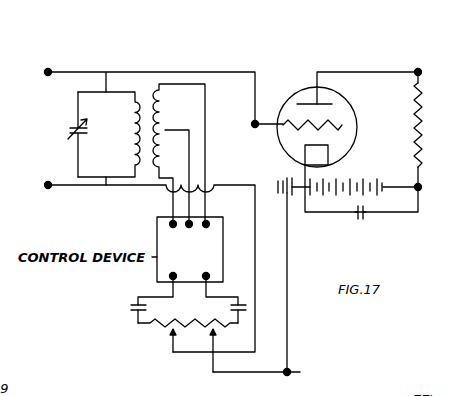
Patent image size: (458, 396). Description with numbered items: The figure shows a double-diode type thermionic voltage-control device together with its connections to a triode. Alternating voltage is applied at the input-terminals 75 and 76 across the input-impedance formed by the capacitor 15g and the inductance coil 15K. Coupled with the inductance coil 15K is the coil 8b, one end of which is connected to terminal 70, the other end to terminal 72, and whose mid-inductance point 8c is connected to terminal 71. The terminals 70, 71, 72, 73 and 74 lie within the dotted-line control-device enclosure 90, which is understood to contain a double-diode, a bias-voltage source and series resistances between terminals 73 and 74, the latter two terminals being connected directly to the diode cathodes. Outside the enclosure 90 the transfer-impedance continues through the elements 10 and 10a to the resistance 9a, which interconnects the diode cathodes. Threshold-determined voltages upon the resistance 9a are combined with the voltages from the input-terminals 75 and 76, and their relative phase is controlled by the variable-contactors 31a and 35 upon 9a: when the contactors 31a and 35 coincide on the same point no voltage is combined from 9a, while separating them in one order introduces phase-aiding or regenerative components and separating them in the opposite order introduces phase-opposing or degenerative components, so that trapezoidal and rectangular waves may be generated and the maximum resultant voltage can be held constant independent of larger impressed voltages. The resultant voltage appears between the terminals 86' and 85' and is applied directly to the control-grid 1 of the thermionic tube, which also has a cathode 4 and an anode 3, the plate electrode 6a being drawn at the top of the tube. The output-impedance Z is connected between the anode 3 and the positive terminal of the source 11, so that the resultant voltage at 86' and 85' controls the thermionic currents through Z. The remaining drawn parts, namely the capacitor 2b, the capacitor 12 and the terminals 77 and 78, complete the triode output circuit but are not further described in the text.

The input-terminal 75 is at (44, 70).
The input-terminal 76 is at (45, 187).
The input-impedance capacitor 15g is at (76, 127).
The inductance coil 15K is at (130, 122).
The coil 8b is at (164, 114).
The mid-inductance point 8c is at (166, 133).
The output terminal 86' is at (239, 120).
The anode 3 is at (326, 100).
The anode 6a is at (313, 88).
The control-grid 1 is at (283, 128).
The cathode 4 is at (332, 156).
The capacitor 2b is at (282, 178).
The output terminal 77 is at (422, 71).
The output-impedance Z is at (413, 113).
The voltage source 11 is at (385, 182).
The output terminal 78 is at (422, 187).
The bypass capacitor 12 is at (365, 218).
The control-device enclosure 90 is at (157, 245).
The terminal 70 is at (169, 226).
The terminal 71 is at (189, 228).
The terminal 72 is at (210, 225).
The terminal 73 is at (169, 276).
The terminal 74 is at (210, 276).
The transfer-impedance element 10 is at (133, 304).
The transfer-impedance element 10a is at (231, 309).
The transfer-impedance resistance 9a is at (151, 325).
The variable-contactor 31a is at (185, 353).
The variable-contactor 35 is at (232, 373).
The output terminal 85' is at (303, 377).